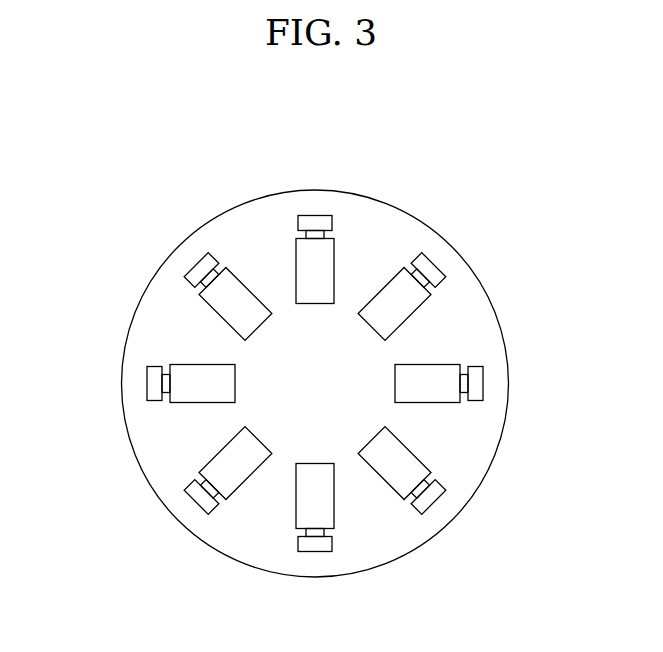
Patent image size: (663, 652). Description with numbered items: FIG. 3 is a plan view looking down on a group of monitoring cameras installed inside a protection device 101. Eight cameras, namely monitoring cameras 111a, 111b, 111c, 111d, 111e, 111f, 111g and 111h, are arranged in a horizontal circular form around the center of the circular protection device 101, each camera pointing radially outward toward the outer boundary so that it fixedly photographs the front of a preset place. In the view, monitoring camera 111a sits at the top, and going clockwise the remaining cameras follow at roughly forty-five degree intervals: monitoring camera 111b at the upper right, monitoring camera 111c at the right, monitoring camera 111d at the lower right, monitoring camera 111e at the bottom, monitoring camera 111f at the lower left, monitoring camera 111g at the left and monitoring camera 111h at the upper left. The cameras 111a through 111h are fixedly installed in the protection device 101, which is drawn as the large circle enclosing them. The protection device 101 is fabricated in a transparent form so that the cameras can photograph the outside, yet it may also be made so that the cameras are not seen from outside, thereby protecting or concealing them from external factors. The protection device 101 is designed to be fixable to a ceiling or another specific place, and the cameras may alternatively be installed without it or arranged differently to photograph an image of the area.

The protection device 101 is at (497, 455).
The monitoring camera 111a is at (315, 215).
The monitoring camera 111b is at (437, 262).
The monitoring camera 111c is at (484, 384).
The monitoring camera 111d is at (435, 505).
The monitoring camera 111e is at (315, 552).
The monitoring camera 111f is at (190, 508).
The monitoring camera 111g is at (145, 384).
The monitoring camera 111h is at (192, 262).